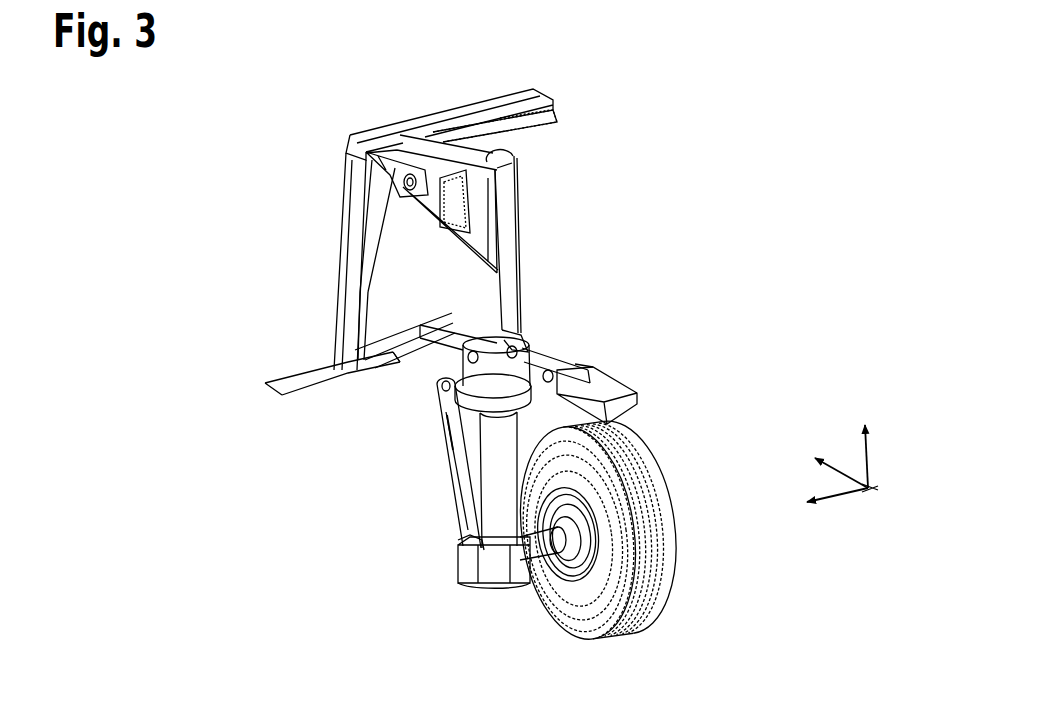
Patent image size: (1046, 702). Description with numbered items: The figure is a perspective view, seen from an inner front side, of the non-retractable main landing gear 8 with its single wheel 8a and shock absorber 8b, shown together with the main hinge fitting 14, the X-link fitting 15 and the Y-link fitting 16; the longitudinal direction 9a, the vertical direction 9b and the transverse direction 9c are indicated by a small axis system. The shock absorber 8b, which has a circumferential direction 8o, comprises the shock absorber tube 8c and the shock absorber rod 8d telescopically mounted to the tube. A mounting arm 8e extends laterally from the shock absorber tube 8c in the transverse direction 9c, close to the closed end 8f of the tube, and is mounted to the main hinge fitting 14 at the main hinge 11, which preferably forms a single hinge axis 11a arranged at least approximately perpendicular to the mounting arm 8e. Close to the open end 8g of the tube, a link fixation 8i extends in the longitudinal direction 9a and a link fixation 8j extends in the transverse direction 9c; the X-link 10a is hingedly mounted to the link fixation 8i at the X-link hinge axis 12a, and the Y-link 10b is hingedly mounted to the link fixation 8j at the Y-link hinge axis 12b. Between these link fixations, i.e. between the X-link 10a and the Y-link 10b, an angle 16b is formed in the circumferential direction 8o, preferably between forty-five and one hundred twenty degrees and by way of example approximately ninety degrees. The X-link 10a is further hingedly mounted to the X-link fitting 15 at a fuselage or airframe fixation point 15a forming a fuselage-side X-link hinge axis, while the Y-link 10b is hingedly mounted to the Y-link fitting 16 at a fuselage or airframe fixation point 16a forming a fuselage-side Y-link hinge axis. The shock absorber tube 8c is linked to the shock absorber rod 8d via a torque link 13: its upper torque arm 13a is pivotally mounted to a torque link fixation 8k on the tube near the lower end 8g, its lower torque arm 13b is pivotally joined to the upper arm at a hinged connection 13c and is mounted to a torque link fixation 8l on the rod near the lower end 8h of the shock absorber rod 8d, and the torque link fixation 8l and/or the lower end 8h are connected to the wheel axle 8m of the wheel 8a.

The main landing gear 8 is at (627, 168).
The wheel 8a is at (652, 592).
The shock absorber 8b is at (521, 233).
The shock absorber tube 8c is at (460, 256).
The shock absorber rod 8d is at (497, 492).
The mounting arm 8e is at (414, 193).
The closed end of the shock absorber tube 8f is at (553, 113).
The open end of the shock absorber tube 8g is at (522, 414).
The lower end of the shock absorber rod 8h is at (500, 588).
The link fixation 8i is at (533, 328).
The link fixation 8j is at (478, 338).
The torque link fixation 8k is at (413, 339).
The torque link fixation 8l is at (477, 561).
The wheel axle 8m is at (547, 545).
The circumferential direction 8o is at (447, 270).
The X-link 10a is at (504, 382).
The Y-link 10b is at (425, 340).
The main hinge 11 is at (398, 176).
The single hinge axis 11a is at (404, 180).
The X-link hinge axis 12a is at (540, 350).
The Y-link hinge axis 12b is at (474, 382).
The torque link 13 is at (447, 494).
The upper torque arm 13a is at (443, 407).
The lower torque arm 13b is at (463, 497).
The hinged connection 13c is at (437, 451).
The main hinge fitting 14 is at (398, 116).
The X-link fitting 15 is at (646, 408).
The fuselage or airframe fixation point 15a is at (581, 357).
The Y-link fitting 16 is at (284, 398).
The fuselage or airframe fixation point 16a is at (392, 378).
The angle 16b is at (480, 437).
The longitudinal direction 9a is at (840, 466).
The vertical direction 9b is at (868, 458).
The transverse direction 9c is at (835, 497).